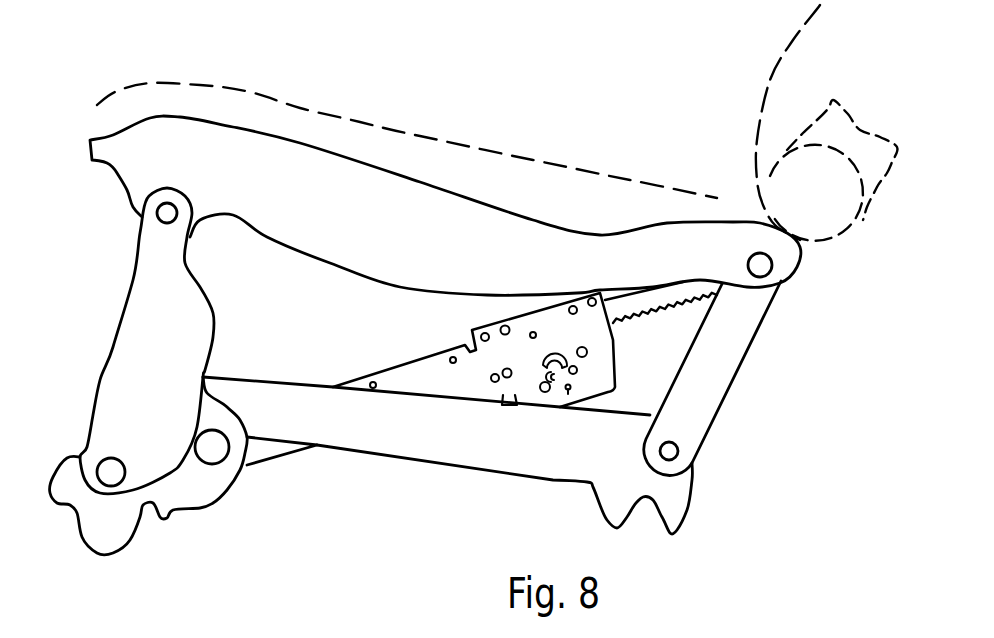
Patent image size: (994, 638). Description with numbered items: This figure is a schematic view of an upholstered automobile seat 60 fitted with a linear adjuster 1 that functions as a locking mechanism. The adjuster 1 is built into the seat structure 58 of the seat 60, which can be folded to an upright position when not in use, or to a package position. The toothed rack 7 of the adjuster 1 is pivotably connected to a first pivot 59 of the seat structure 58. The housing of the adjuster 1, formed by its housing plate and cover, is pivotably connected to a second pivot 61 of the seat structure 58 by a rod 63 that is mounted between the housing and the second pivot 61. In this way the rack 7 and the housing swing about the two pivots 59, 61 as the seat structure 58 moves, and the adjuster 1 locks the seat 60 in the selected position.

The adjuster 1 is at (482, 360).
The rack 7 is at (657, 300).
The seat structure 58 is at (238, 478).
The first pivot 59 is at (760, 264).
The seat 60 is at (423, 134).
The second pivot 61 is at (213, 452).
The rod 63 is at (278, 458).